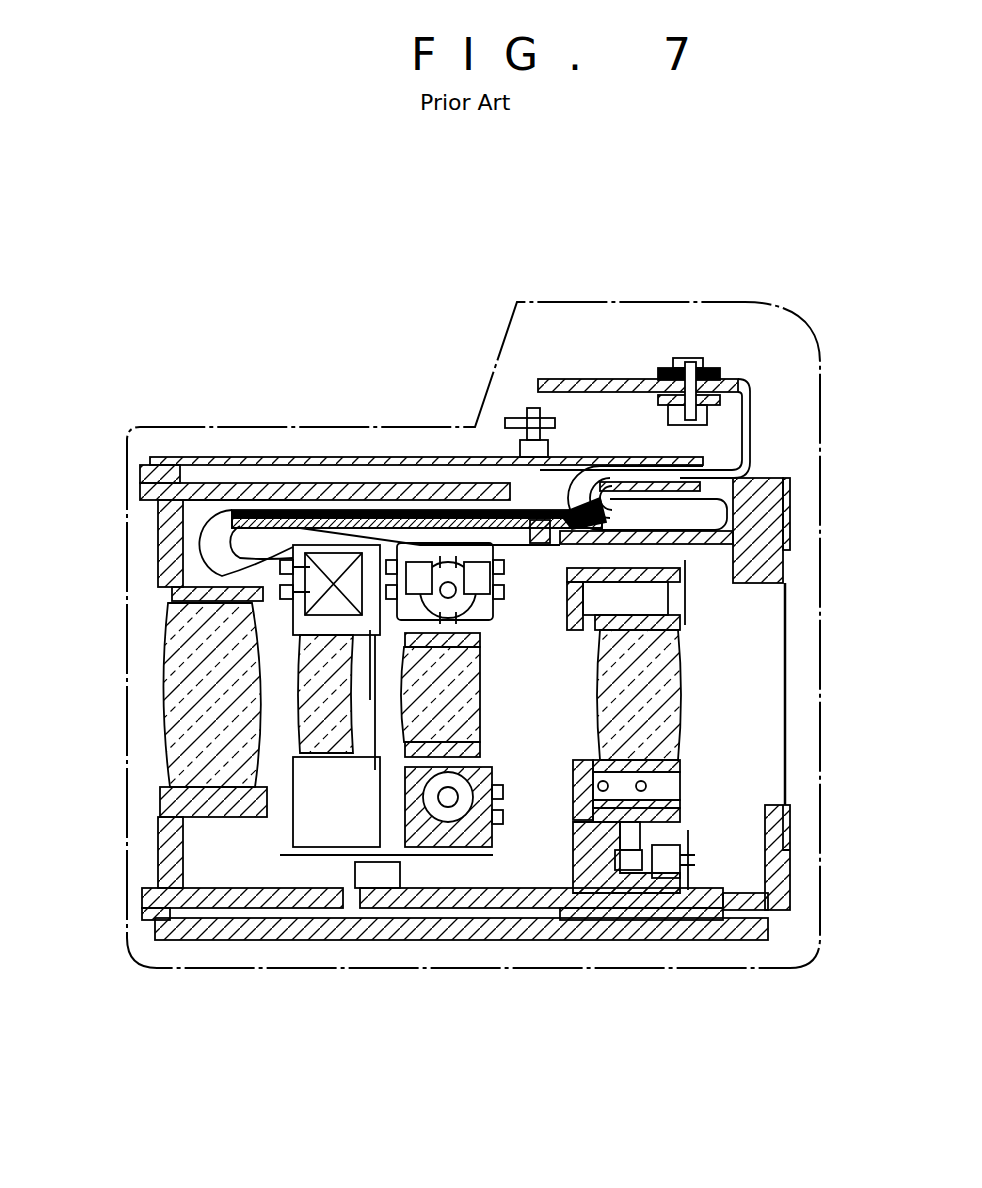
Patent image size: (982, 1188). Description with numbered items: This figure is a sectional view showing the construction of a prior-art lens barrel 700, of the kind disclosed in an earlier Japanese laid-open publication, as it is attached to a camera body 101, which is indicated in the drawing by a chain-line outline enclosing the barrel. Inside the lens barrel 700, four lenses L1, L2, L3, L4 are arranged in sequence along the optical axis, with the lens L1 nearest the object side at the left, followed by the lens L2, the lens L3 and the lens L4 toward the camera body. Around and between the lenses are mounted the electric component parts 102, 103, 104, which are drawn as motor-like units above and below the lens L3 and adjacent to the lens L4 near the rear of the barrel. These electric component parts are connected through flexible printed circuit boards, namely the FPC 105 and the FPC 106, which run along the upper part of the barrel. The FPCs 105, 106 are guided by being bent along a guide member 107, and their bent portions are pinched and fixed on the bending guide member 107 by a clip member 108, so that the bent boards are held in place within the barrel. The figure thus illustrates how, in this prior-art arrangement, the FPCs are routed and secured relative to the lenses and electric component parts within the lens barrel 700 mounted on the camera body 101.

The camera body 101 is at (625, 299).
The electric component part 102 is at (448, 810).
The electric component part 103 is at (478, 588).
The electric component part 104 is at (658, 862).
The flexible printed circuit board 105 is at (200, 515).
The flexible printed circuit board 106 is at (222, 535).
The guide member 107 is at (676, 474).
The clip member 108 is at (620, 460).
The lens barrel 700 is at (785, 697).
The lens L1 is at (165, 678).
The lens L2 is at (300, 725).
The lens L3 is at (455, 715).
The lens L4 is at (658, 727).